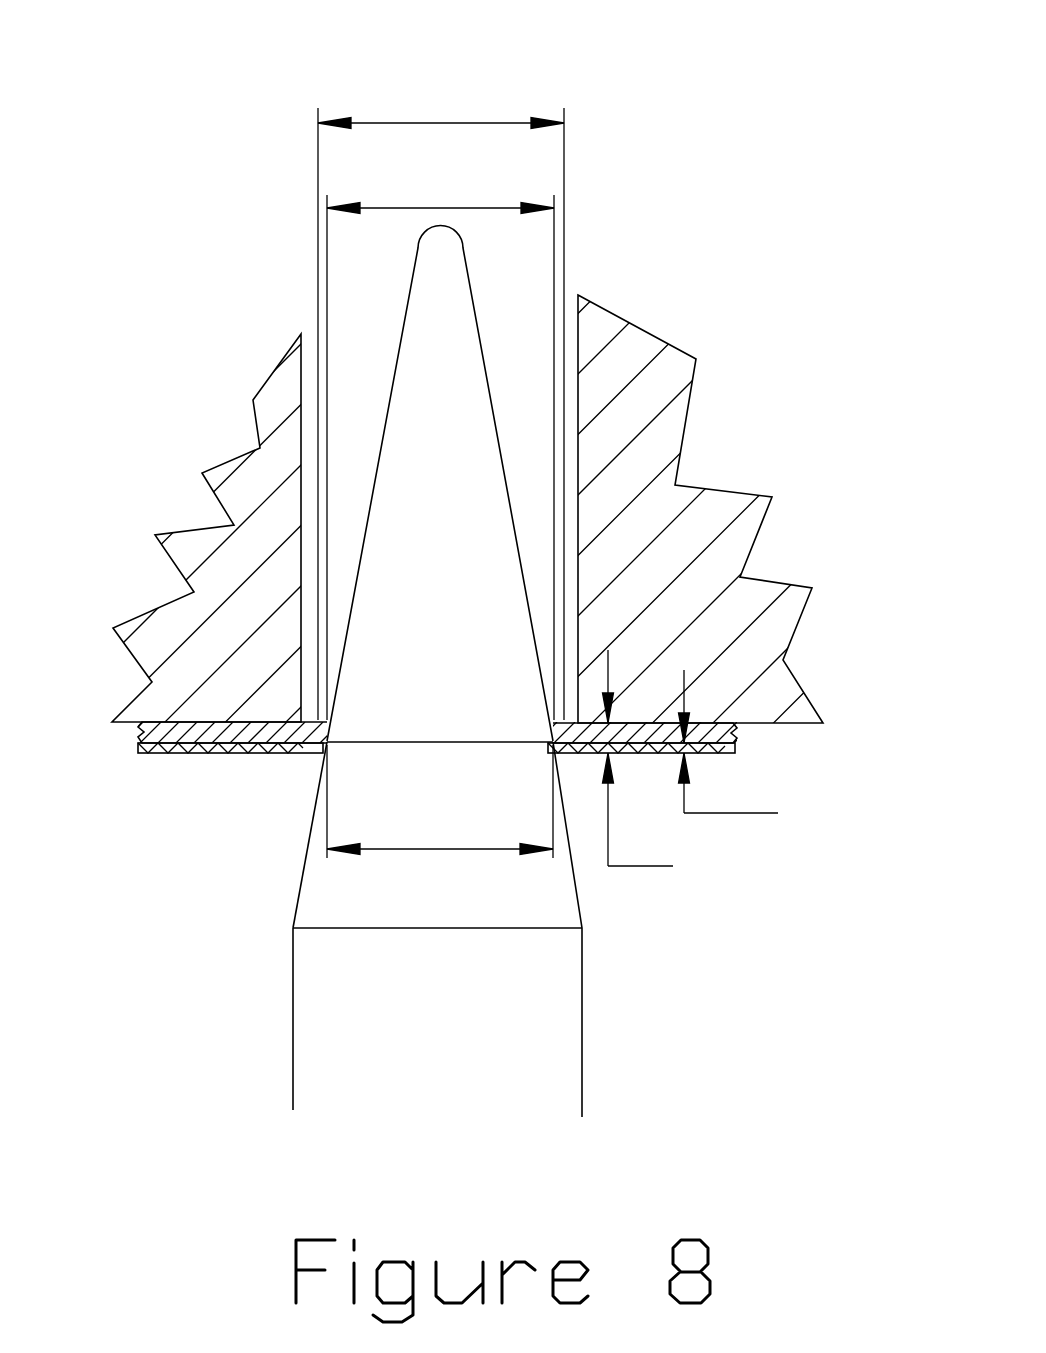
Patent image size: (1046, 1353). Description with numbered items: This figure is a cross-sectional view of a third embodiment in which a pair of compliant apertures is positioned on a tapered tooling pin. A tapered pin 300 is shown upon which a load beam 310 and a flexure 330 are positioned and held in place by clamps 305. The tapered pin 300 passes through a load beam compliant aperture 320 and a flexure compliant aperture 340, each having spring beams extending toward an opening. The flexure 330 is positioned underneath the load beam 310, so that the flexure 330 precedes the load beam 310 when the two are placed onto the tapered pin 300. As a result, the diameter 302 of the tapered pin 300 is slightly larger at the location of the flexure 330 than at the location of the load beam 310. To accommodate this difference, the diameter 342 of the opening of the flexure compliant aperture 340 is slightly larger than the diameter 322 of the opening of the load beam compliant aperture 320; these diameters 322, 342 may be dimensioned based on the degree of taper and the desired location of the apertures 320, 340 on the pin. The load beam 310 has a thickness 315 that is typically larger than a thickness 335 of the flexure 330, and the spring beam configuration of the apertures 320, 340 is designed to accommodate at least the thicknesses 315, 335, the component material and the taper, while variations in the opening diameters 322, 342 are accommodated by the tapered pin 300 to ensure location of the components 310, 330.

The tapered pin 300 is at (577, 885).
The diameter of the tapered pin 302 is at (425, 122).
The clamps 305 is at (300, 435).
The load beam 310 is at (152, 735).
The load beam thickness 315 is at (685, 770).
The load beam compliant aperture 320 is at (548, 742).
The diameter of the opening of the load beam compliant aperture 322 is at (475, 208).
The flexure 330 is at (203, 748).
The flexure thickness 335 is at (776, 754).
The flexure compliant aperture 340 is at (550, 743).
The diameter of the opening of the flexure compliant aperture 342 is at (438, 849).